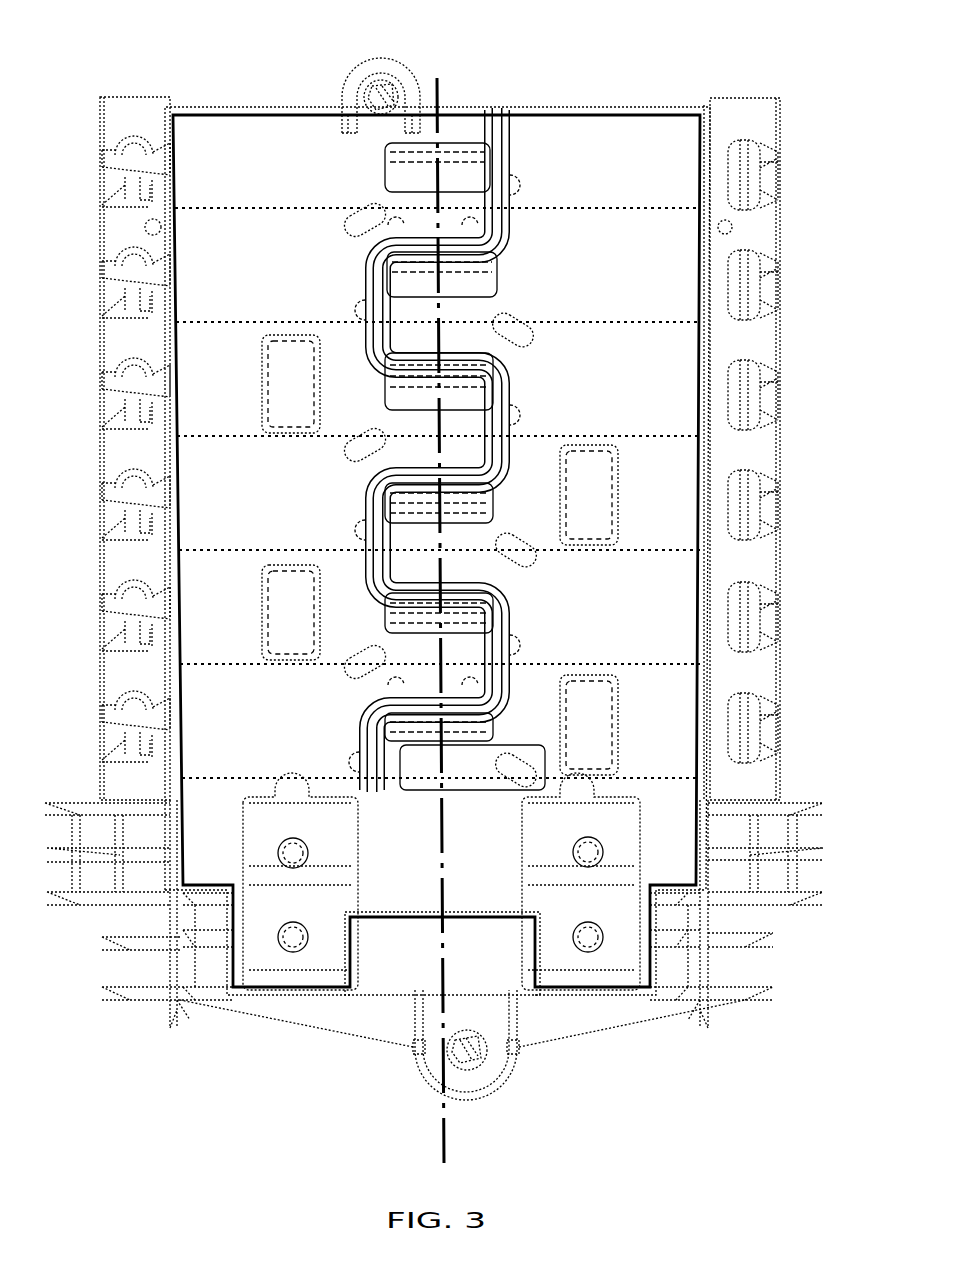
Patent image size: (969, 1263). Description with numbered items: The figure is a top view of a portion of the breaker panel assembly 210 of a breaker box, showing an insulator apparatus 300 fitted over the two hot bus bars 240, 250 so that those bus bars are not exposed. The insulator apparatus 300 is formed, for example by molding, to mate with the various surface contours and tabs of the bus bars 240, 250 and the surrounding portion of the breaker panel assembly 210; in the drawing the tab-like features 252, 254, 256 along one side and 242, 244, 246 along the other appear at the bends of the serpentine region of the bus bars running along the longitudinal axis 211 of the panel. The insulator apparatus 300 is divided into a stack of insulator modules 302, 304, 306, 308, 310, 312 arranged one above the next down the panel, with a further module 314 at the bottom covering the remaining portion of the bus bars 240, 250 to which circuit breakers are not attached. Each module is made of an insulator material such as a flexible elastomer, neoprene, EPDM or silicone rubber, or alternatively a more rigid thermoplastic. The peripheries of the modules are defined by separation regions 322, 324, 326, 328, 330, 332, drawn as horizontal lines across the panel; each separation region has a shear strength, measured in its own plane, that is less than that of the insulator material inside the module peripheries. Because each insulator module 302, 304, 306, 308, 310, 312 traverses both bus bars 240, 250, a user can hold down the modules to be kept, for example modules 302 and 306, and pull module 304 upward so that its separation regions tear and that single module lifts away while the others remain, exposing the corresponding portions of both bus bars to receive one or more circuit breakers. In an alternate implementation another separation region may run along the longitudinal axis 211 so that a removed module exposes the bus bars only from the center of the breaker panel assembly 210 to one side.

The breaker panel assembly 210 is at (713, 100).
The longitudinal axis 211 is at (437, 95).
The bus bar 240 is at (550, 133).
The clip 242 is at (498, 278).
The clip 244 is at (487, 510).
The clip 246 is at (490, 728).
The bus bar 250 is at (270, 130).
The clip 252 is at (398, 173).
The clip 254 is at (388, 407).
The clip 256 is at (388, 630).
The insulator apparatus 300 is at (465, 118).
The insulator module 302 is at (438, 162).
The insulator module 304 is at (438, 265).
The insulator module 306 is at (438, 379).
The insulator module 308 is at (438, 493).
The insulator module 310 is at (438, 607).
The sixth zone 312 is at (438, 721).
The module 314 is at (438, 830).
The separation region 322 is at (677, 208).
The separation region 324 is at (673, 320).
The separation region 326 is at (668, 436).
The separation region 328 is at (668, 548).
The separation region 330 is at (663, 662).
The separation region 332 is at (660, 776).